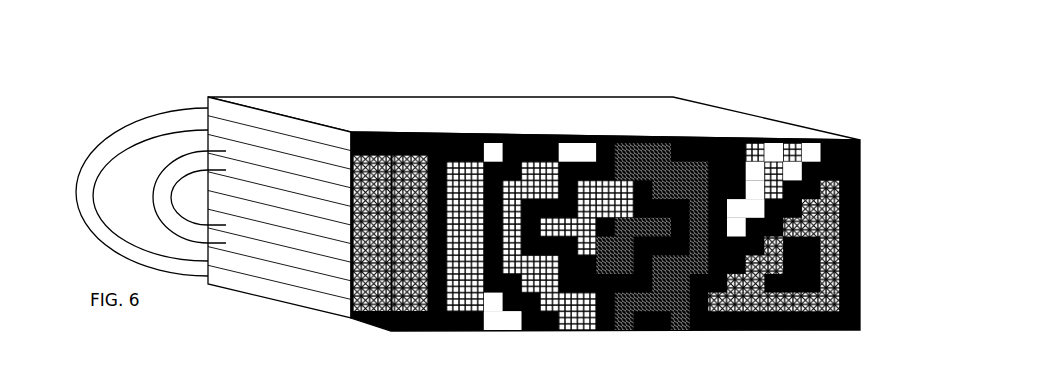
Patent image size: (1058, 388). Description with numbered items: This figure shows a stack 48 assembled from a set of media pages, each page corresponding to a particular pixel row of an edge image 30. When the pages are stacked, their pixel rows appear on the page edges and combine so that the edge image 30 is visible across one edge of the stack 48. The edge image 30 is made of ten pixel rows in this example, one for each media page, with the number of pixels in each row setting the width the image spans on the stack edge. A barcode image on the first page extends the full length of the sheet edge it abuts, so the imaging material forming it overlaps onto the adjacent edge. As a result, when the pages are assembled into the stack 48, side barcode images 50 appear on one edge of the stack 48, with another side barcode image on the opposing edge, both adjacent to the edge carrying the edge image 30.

The stack 48 is at (683, 60).
The edge image 30 is at (488, 293).
The side barcode images 50 is at (363, 270).